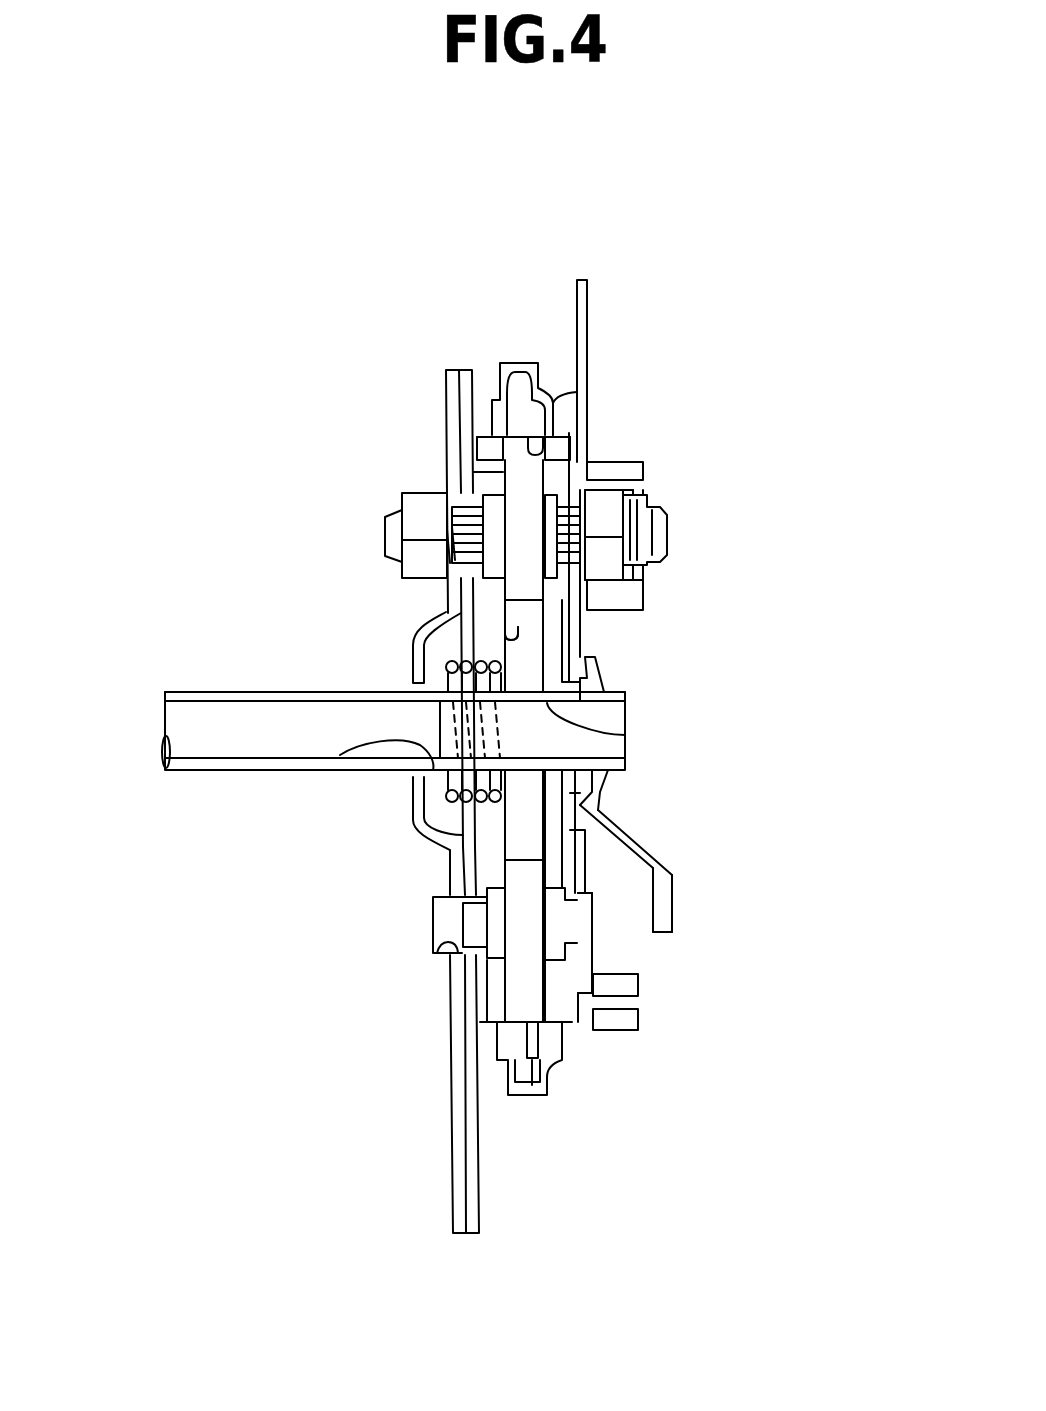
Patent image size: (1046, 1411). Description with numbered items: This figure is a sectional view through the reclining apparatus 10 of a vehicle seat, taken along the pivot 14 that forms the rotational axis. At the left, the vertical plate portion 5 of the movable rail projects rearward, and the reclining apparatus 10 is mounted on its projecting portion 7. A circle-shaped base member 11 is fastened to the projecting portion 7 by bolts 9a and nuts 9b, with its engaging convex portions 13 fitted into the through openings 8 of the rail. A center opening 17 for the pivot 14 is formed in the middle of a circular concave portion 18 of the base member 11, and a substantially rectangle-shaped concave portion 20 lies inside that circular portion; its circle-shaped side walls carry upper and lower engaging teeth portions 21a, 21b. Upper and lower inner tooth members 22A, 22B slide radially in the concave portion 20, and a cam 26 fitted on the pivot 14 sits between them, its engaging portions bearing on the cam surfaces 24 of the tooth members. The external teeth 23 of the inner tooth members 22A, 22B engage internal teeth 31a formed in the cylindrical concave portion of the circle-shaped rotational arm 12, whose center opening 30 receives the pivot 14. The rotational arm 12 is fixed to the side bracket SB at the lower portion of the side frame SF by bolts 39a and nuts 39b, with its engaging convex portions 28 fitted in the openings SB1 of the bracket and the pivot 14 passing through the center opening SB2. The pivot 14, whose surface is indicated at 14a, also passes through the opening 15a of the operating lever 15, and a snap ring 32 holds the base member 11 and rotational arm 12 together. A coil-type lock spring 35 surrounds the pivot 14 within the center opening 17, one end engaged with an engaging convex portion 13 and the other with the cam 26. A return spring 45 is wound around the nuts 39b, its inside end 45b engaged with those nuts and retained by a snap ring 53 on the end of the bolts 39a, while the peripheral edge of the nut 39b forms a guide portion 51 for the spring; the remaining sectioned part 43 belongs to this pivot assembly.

The reclining apparatus 10 is at (460, 183).
The vertical plate portion 5 is at (450, 1195).
The projecting portion 7 is at (413, 803).
The through openings 8 is at (433, 943).
The bolts 9a is at (383, 527).
The nuts 9b is at (410, 490).
The base member 11 is at (500, 421).
The rotational arm 12 is at (537, 413).
The engaging convex portions 13 is at (440, 918).
The pivot 14 is at (193, 725).
The shaft surface 14a is at (218, 695).
The operating lever 15 is at (673, 897).
The opening of the operating lever 15a is at (592, 700).
The center opening 17 is at (440, 723).
The circular concave portion 18 is at (500, 635).
The rectangle-shaped concave portion 20 is at (511, 633).
The upper engaging teeth portion 21a is at (478, 437).
The lower engaging teeth portion 21b is at (490, 997).
The upper inner tooth member 22A is at (503, 472).
The lower inner tooth member 22B is at (573, 1023).
The external teeth 23 is at (505, 412).
The cam surfaces 24 is at (607, 792).
The cam 26 is at (520, 823).
The engaging convex portions 28 is at (600, 940).
The center opening 30 is at (550, 703).
The internal teeth 31a is at (618, 470).
The snap ring 32 is at (603, 678).
The lock spring 35 is at (450, 664).
The bolts 39a is at (662, 535).
The nuts 39b is at (645, 490).
The sleeve 43 is at (340, 755).
The return spring 45 is at (618, 472).
The inside end of return spring 45b is at (610, 597).
The guide portion 51 is at (687, 512).
The snap ring 53 is at (643, 478).
The side frames SF is at (588, 318).
The side bracket SB is at (582, 870).
The openings SB1 is at (598, 943).
The center opening SB2 is at (580, 828).